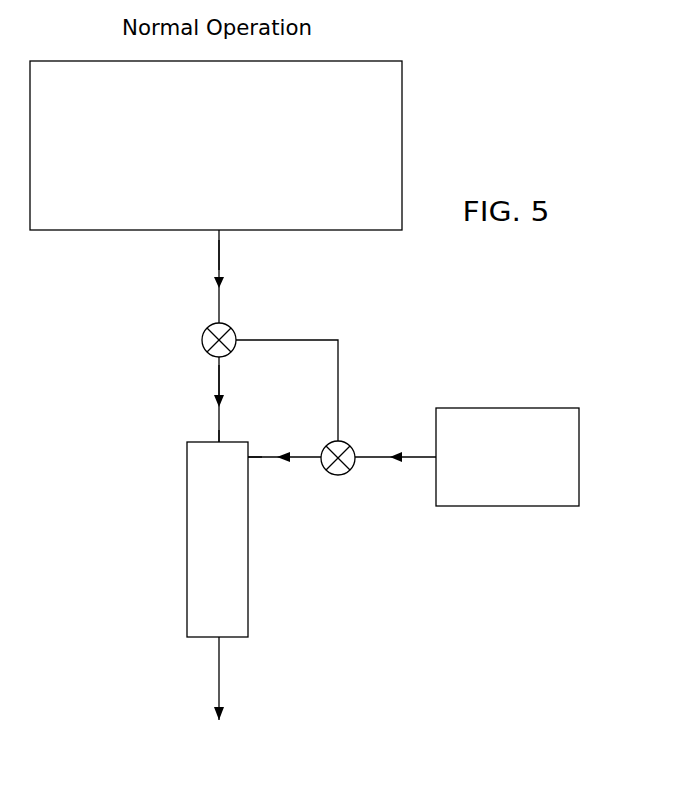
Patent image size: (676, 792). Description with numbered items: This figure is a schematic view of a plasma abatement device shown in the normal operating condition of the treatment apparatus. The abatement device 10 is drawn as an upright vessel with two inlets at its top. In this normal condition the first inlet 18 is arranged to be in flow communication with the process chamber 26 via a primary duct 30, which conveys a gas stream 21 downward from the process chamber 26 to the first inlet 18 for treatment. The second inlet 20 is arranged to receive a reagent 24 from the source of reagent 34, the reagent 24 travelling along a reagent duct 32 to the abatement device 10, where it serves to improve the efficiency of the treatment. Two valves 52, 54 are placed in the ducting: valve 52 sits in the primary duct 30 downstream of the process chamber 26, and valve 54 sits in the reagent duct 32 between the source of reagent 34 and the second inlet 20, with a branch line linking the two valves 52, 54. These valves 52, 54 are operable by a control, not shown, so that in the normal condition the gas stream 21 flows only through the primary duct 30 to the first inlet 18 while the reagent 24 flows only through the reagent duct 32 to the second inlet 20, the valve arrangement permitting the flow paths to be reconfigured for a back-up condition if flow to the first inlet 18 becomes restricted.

The reactor vessel 10 is at (206, 544).
The first inlet 18 is at (218, 446).
The second inlet 20 is at (248, 458).
The gas stream 21 is at (211, 293).
The reagent 24 is at (298, 447).
The process chamber 26 is at (204, 153).
The primary duct 30 is at (219, 253).
The reagent duct 32 is at (311, 455).
The source of reagent 34 is at (493, 477).
The valve 52 is at (233, 330).
The valve 54 is at (350, 443).